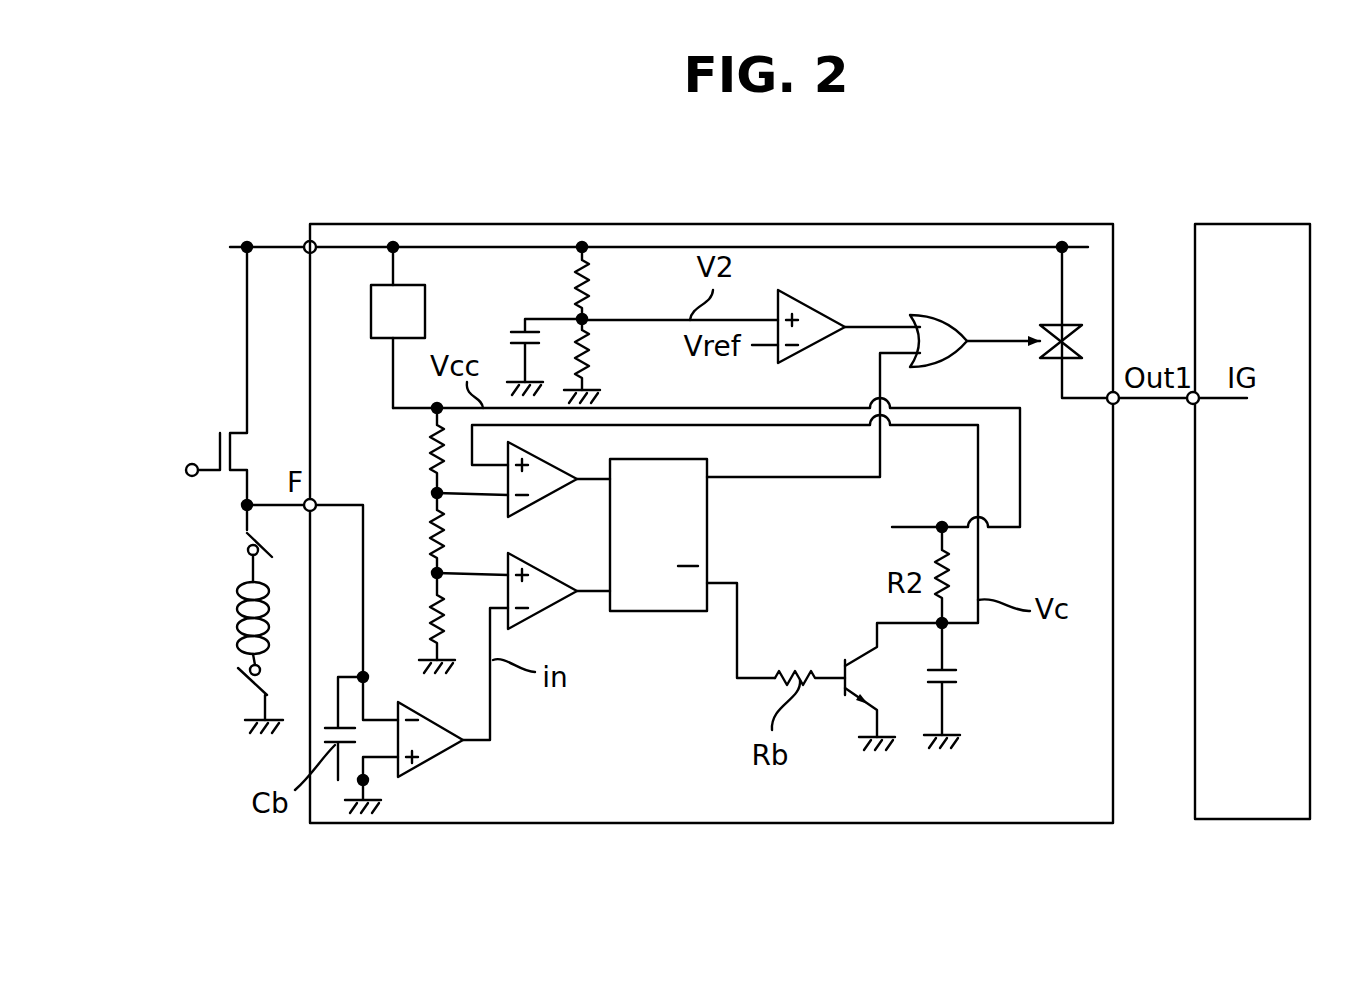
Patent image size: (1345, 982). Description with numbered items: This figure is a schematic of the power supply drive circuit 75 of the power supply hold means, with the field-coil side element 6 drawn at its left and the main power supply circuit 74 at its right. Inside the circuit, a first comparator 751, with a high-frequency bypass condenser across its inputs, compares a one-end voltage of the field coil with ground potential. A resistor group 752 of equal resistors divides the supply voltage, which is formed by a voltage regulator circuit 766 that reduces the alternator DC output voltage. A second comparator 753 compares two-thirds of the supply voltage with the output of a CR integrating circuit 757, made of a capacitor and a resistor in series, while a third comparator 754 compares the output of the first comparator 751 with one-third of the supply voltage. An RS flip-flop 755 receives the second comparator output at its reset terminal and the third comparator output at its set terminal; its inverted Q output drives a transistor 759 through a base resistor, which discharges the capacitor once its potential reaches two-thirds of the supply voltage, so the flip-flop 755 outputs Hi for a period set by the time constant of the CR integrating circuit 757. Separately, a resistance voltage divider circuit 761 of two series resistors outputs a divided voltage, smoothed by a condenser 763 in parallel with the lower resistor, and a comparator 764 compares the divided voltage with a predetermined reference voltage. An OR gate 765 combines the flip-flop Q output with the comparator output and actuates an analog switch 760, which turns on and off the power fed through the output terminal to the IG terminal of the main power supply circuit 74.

The field coil with brushes 6 is at (252, 686).
The main power supply circuit 74 is at (1270, 820).
The power supply drive circuit 75 is at (1080, 825).
The first comparator 751 is at (428, 765).
The resistor group 752 is at (432, 440).
The second comparator 753 is at (533, 452).
The third comparator 754 is at (563, 597).
The RS flip-flop 755 is at (670, 613).
The CR integrating circuit 757 is at (968, 700).
The transistor 759 is at (847, 720).
The analog switch 760 is at (1082, 340).
The resistance voltage divider circuit 761 is at (640, 288).
The condenser 763 is at (520, 325).
The comparator 764 is at (810, 300).
The OR gate 765 is at (925, 315).
The voltage regulator circuit 766 is at (413, 285).